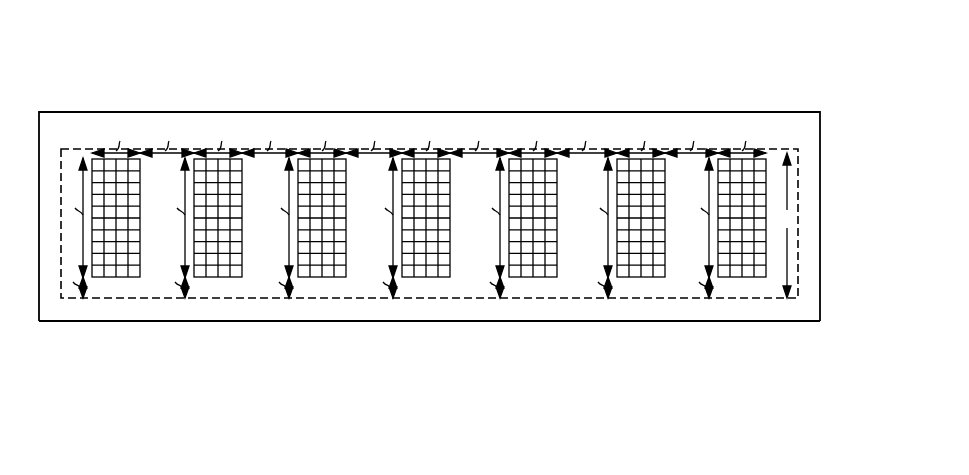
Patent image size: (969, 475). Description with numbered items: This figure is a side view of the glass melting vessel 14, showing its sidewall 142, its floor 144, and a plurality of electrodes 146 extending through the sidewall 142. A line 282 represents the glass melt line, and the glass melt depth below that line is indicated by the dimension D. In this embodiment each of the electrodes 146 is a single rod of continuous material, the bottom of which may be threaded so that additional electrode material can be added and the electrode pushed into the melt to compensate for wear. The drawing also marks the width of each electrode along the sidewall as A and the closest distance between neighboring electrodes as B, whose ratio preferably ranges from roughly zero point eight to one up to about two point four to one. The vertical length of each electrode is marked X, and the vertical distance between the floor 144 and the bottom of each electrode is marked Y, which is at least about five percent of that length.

The glass melting vessel 14 is at (428, 87).
The sidewall 142 is at (820, 217).
The floor 144 is at (488, 321).
The electrodes 146 is at (113, 277).
The glass melt line 282 is at (612, 148).